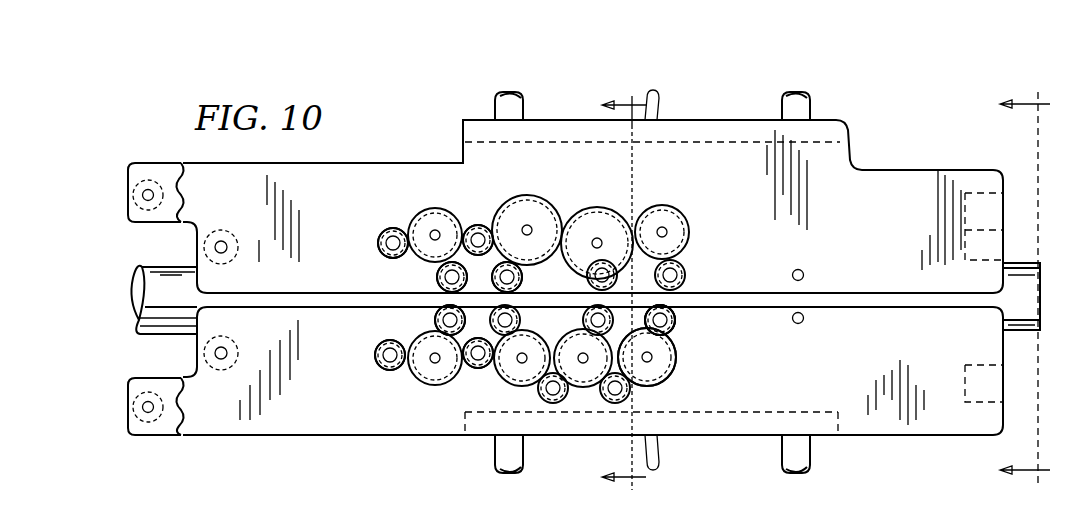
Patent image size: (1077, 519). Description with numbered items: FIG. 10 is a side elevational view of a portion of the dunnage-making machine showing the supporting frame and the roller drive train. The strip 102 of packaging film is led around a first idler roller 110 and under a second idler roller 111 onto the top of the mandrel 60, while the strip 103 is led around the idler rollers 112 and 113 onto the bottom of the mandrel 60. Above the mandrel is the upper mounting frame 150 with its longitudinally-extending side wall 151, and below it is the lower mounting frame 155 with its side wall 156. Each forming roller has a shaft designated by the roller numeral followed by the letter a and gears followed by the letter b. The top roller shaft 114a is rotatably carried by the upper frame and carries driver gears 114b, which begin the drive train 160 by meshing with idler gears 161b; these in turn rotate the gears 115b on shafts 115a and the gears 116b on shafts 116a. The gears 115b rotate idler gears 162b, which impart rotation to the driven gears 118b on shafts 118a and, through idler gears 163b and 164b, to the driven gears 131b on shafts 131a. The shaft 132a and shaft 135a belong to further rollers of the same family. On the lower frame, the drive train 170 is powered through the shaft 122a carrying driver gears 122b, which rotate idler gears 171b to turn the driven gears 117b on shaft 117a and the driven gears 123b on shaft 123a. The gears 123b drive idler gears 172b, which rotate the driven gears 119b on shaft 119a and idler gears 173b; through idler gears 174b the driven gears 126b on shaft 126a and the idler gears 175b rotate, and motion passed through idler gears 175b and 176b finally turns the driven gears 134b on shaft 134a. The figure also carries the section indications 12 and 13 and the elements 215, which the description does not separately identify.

The mandrel 60 is at (160, 310).
The strip 102 is at (172, 235).
The strip 103 is at (178, 362).
The first idler roller 110 is at (148, 162).
The second idler roller 111 is at (222, 240).
The idler roller 112 is at (148, 436).
The idler roller 113 is at (222, 372).
The shaft 114a is at (393, 236).
The driver gears 114b is at (392, 242).
The shafts 115a is at (478, 240).
The gears 115b is at (478, 240).
The shafts 116a is at (440, 278).
The gears 116b is at (445, 272).
The shaft 117a is at (438, 318).
The driven gears 117b is at (440, 326).
The shafts 118a is at (522, 279).
The driven gears 118b is at (507, 265).
The shaft 119a is at (506, 330).
The driven gears 119b is at (520, 320).
The shaft 122a is at (385, 353).
The driver gears 122b is at (390, 362).
The shaft 123a is at (470, 362).
The driven gears 123b is at (478, 368).
The shaft 126a is at (612, 268).
The driven gears 126b is at (598, 306).
The shafts 131a is at (670, 308).
The driven gears 131b is at (668, 306).
The shaft 132a is at (803, 270).
The shaft 134a is at (685, 276).
The driven gears 134b is at (675, 320).
The shaft 135a is at (804, 318).
The upper mounting frame 150 is at (941, 168).
The side wall 151 is at (872, 172).
The lower mounting frame 155 is at (940, 438).
The side wall 156 is at (870, 422).
The drive train 160 is at (812, 222).
The idler gears 161b is at (420, 214).
The idler gears 162b is at (530, 215).
The idler gears 163b is at (597, 222).
The idler gears 164b is at (662, 214).
The drive train 170 is at (808, 363).
The idler gears 171b is at (420, 372).
The idler gears 172b is at (522, 386).
The idler gears 173b is at (560, 400).
The idler gears 174b is at (583, 388).
The idler gears 175b is at (635, 388).
The idler gears 176b is at (678, 355).
The locating pin 215 is at (495, 104).
The section line 12- 12 is at (1037, 288).
The section line 13- 13 is at (609, 292).